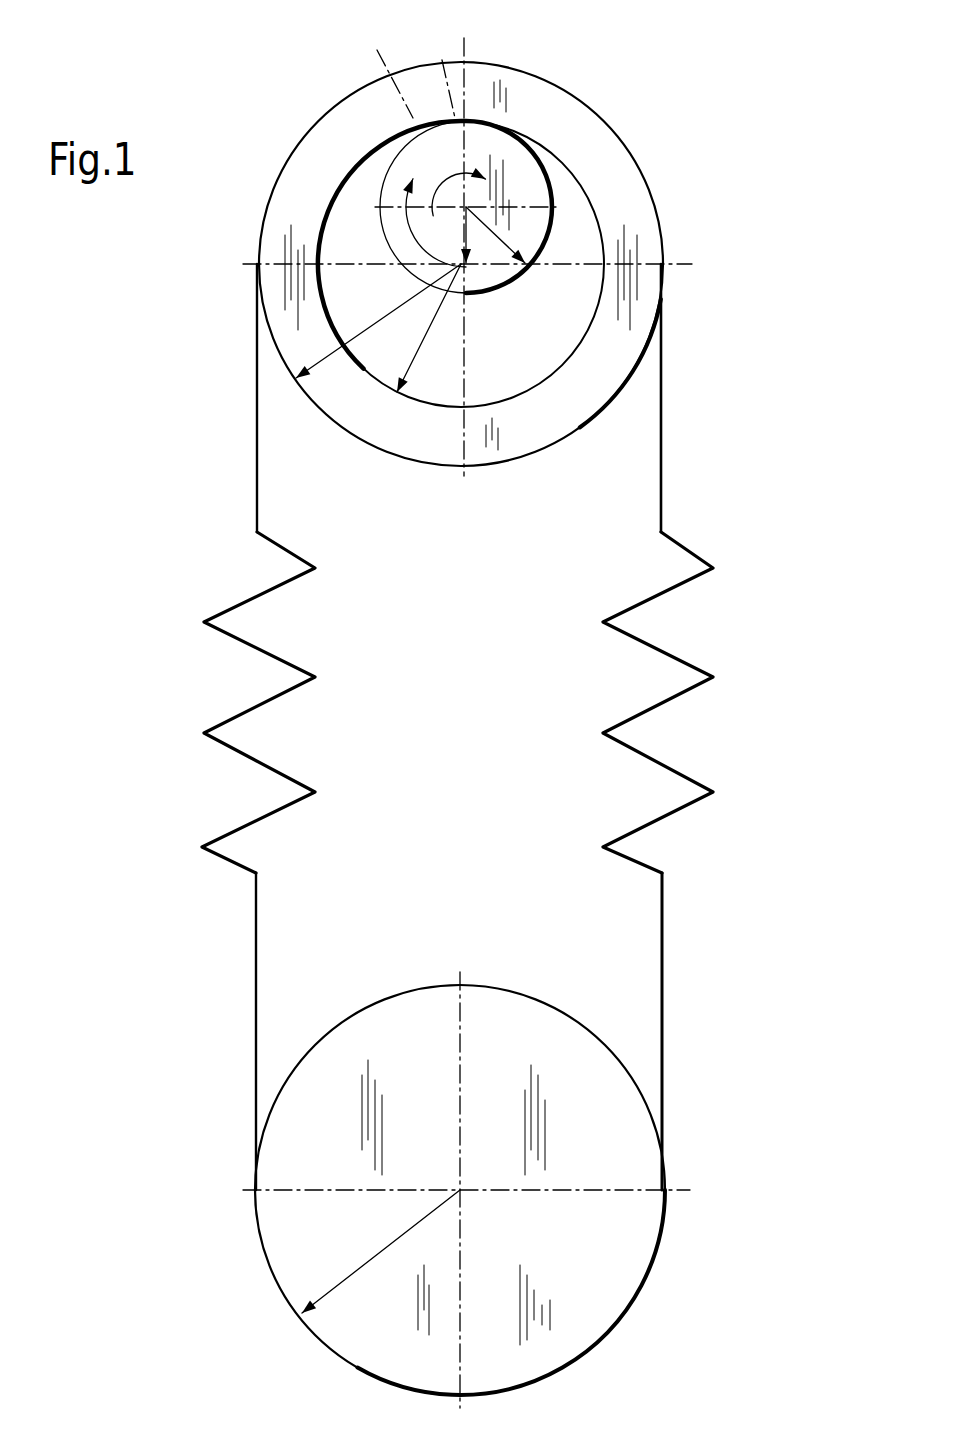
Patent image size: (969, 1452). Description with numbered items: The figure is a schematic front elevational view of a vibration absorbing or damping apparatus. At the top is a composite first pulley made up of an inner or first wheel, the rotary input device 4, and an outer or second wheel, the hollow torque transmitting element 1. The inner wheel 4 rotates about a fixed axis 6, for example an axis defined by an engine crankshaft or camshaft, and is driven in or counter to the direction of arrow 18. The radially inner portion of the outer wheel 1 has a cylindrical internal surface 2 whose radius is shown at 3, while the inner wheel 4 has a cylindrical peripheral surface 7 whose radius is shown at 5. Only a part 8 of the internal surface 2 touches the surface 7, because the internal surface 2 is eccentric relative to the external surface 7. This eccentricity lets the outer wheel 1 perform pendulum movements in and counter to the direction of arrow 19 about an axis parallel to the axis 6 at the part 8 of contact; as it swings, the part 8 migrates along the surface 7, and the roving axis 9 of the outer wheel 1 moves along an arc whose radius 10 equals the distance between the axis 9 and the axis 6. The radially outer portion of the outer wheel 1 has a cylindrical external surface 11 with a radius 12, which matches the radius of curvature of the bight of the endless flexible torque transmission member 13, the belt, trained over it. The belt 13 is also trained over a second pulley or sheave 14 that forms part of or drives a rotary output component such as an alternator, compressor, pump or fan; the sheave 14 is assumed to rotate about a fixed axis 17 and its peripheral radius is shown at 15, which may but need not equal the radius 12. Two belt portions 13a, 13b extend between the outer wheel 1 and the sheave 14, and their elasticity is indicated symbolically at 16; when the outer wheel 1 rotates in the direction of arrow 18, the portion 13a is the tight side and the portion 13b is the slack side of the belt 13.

The hollow torque transmitting element 1 is at (618, 188).
The cylindrical internal surface 2 is at (312, 216).
The radius of the internal surface 3 is at (418, 346).
The rotary input device 4 is at (525, 232).
The radius of the inner wheel 5 is at (493, 235).
The fixed axis 6 is at (466, 207).
The cylindrical surface 7 is at (442, 173).
The part of contact 8 is at (442, 57).
The roving axis 9 is at (463, 267).
The radius of the arc 10 is at (466, 207).
The cylindrical external surface 11 is at (583, 103).
The radius of the external surface 12 is at (365, 334).
The endless flexible torque transmission member 13 is at (662, 421).
The belt portion 13a is at (255, 939).
The belt portion 13b is at (663, 921).
The second pulley or sheave 14 is at (578, 1295).
The radius of the sheave peripheral surface 15 is at (358, 1273).
The elasticity of the belt portions 16 is at (223, 722).
The fixed axis of the sheave 17 is at (460, 1191).
The arrow 18 is at (389, 67).
The arrow 19 is at (403, 197).